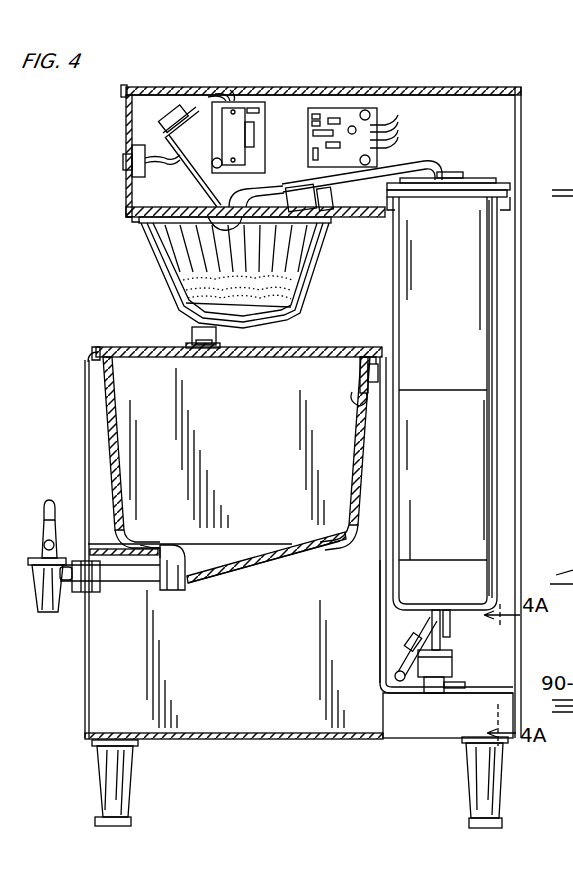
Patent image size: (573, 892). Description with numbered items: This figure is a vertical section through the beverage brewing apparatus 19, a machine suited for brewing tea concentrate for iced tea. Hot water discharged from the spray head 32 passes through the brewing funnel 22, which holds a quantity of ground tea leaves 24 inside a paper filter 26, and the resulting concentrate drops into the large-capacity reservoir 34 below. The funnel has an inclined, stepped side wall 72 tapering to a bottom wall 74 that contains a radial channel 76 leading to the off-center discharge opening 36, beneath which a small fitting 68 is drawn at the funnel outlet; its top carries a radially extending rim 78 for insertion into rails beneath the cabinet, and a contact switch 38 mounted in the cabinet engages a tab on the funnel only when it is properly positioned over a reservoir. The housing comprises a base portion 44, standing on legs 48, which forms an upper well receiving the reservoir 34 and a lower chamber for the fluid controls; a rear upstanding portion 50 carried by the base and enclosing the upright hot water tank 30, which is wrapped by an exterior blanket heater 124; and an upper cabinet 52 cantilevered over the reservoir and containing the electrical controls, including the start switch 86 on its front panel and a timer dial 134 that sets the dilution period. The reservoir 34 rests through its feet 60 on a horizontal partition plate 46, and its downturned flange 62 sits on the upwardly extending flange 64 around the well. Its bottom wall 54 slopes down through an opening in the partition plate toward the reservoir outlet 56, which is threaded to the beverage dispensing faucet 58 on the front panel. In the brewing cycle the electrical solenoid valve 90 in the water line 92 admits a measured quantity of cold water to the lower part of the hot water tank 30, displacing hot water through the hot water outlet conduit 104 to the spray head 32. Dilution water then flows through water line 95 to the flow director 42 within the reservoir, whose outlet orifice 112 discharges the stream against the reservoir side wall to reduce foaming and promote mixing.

The beverage brewing apparatus 19 is at (97, 268).
The brewing funnel 22 is at (150, 262).
The ground tea leaves 24 is at (272, 296).
The paper filter 26 is at (306, 252).
The hot water tank 30 is at (500, 306).
The spray head 32 is at (212, 230).
The reservoir 34 is at (248, 474).
The off-center discharge opening 36 is at (201, 348).
The contact switch 38 is at (298, 186).
The flow director 42 is at (358, 372).
The base portion 44 is at (85, 470).
The horizontal partition plate 46 is at (320, 566).
The legs 48 is at (115, 762).
The rear upstanding portion 50 is at (528, 400).
The upper cabinet 52 is at (352, 87).
The bottom wall 54 is at (262, 558).
The reservoir outlet 56 is at (183, 552).
The beverage dispensing faucet 58 is at (37, 592).
The feet 60 is at (95, 546).
The downturned flange 62 is at (94, 348).
The upwardly extending flange 64 is at (90, 362).
The support ring 68 is at (186, 343).
The stepped side wall 72 is at (300, 276).
The bottom wall 74 is at (239, 339).
The radial channel 76 is at (215, 334).
The rim 78 is at (128, 220).
The start switch 86 is at (123, 160).
The electrical solenoid valve 90 is at (452, 665).
The water line 92 is at (449, 624).
The water line 95 is at (378, 612).
The hot water outlet conduit 104 is at (426, 160).
The outlet orifice 112 is at (352, 397).
The exterior blanket heater 124 is at (497, 503).
The dial 134 is at (160, 118).